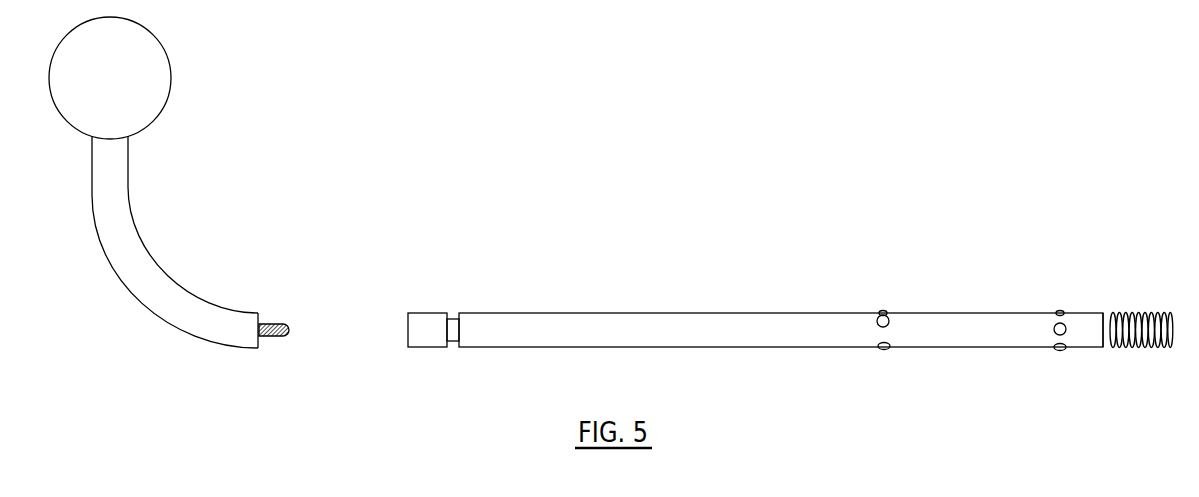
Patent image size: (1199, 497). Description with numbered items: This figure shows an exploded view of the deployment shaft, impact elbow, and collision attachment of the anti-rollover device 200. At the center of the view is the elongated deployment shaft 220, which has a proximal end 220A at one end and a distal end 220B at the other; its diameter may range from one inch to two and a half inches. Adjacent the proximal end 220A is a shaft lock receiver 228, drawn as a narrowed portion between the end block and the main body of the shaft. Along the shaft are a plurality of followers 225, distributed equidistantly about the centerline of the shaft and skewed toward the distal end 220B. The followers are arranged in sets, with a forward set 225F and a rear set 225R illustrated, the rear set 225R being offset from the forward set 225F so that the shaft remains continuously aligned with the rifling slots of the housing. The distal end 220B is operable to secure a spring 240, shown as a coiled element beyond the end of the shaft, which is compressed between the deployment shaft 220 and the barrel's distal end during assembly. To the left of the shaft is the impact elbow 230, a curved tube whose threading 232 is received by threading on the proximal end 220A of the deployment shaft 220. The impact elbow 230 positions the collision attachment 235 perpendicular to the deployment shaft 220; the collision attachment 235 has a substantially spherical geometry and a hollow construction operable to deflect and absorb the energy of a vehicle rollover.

The anti-rollover device 200 is at (620, 155).
The collision attachment 235 is at (110, 78).
The impact elbow 230 is at (193, 305).
The threading 232 is at (273, 323).
The deployment shaft 220 is at (653, 330).
The proximal end 220A is at (408, 330).
The distal end 220B is at (1107, 327).
The shaft lock receiver 228 is at (452, 320).
The followers 225 is at (927, 315).
The forward follower set 225F is at (878, 348).
The rear follower set 225R is at (1056, 350).
The spring 240 is at (1140, 312).